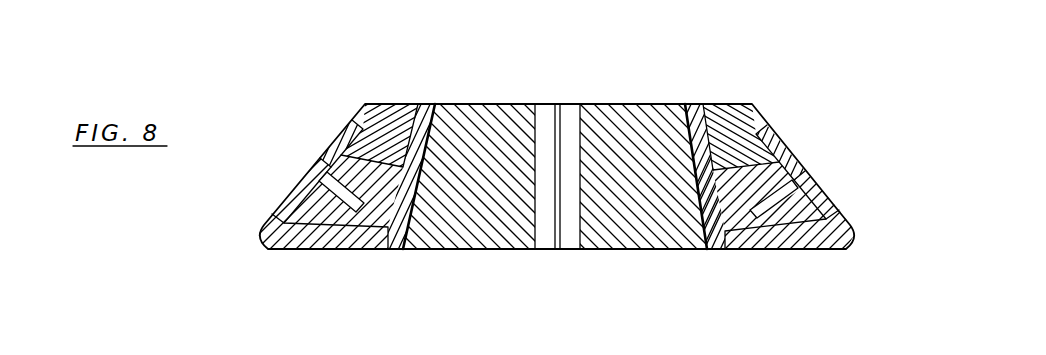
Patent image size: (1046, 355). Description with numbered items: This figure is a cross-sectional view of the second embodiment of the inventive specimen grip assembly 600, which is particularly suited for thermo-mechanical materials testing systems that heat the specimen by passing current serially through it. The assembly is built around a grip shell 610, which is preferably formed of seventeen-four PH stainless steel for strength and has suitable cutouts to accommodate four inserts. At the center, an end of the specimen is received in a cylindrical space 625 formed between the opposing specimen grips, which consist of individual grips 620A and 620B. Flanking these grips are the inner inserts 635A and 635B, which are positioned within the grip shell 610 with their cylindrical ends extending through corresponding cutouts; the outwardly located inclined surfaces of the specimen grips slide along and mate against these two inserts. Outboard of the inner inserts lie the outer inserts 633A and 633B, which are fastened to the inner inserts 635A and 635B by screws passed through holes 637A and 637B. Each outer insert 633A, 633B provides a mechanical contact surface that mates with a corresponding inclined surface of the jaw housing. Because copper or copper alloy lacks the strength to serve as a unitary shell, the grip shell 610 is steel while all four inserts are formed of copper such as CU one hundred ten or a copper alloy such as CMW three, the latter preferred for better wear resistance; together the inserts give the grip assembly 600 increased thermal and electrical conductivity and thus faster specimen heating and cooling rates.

The specimen grip assembly 600 is at (818, 99).
The grip shell 610 is at (310, 236).
The individual grip 620A is at (634, 236).
The individual grip 620B is at (464, 238).
The cylindrical space 625 is at (564, 93).
The outer insert 633A is at (822, 200).
The outer insert 633B is at (282, 199).
The inner insert 635A is at (700, 104).
The inner insert 635B is at (433, 104).
The hole 637A is at (805, 164).
The hole 637B is at (318, 126).